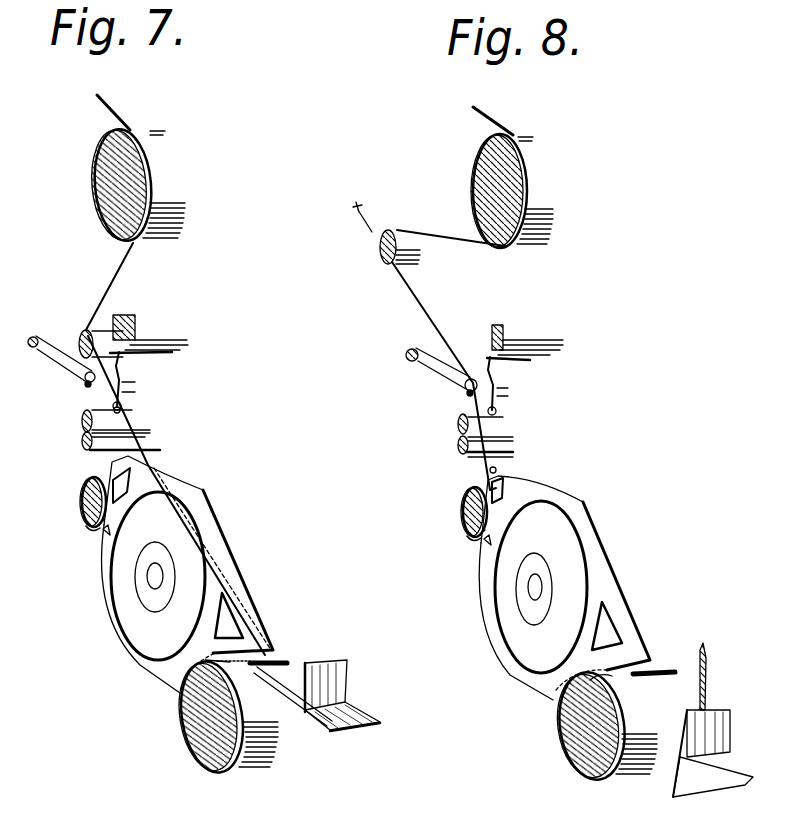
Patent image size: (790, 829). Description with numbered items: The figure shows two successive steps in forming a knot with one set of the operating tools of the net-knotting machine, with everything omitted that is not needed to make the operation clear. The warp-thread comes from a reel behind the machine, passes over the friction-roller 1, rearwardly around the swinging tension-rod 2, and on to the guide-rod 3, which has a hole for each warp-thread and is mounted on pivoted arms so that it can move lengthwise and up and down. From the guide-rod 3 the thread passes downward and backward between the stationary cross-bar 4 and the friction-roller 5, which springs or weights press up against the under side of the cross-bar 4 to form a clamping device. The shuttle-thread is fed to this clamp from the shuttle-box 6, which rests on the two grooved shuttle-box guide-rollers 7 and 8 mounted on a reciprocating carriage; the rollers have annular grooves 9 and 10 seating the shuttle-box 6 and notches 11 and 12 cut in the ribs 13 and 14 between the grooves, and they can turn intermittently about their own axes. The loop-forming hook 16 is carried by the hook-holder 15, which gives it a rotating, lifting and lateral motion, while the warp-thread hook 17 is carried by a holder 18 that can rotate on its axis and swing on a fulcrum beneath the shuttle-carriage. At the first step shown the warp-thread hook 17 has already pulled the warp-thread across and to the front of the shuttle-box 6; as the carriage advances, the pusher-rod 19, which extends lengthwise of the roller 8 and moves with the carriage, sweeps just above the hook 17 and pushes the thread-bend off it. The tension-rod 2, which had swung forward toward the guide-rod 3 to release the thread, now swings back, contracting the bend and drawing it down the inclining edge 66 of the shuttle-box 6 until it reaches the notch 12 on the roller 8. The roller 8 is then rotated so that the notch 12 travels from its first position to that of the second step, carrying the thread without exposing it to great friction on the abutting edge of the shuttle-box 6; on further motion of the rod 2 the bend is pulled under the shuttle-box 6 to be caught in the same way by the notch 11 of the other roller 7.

In FIG. 7, the friction-roller 1 is at (98, 190).
In FIG. 8, the friction-roller 1 is at (485, 178).
In FIG. 7, the tension-rod 2 is at (80, 348).
In FIG. 8, the tension-rod 2 is at (380, 250).
In FIG. 7, the guide-rod 3 is at (85, 377).
In FIG. 8, the guide-rod 3 is at (465, 388).
In FIG. 7, the stationary cross-bar 4 is at (82, 420).
In FIG. 8, the stationary cross-bar 4 is at (458, 428).
In FIG. 7, the friction-roller 5 is at (82, 442).
In FIG. 8, the friction-roller 5 is at (458, 450).
In FIG. 7, the shuttle-box 6 is at (118, 613).
In FIG. 8, the shuttle-box 6 is at (508, 630).
In FIG. 7, the shuttle-box guide-roller 7 is at (82, 508).
In FIG. 8, the shuttle-box guide-roller 7 is at (461, 512).
In FIG. 7, the shuttle-box guide-roller 8 is at (190, 720).
In FIG. 8, the shuttle-box guide-roller 8 is at (568, 733).
In FIG. 7, the annular groove 9 is at (87, 527).
In FIG. 8, the annular groove 9 is at (467, 536).
In FIG. 7, the annular groove 10 is at (197, 755).
In FIG. 8, the annular groove 10 is at (580, 770).
In FIG. 7, the notch 11 is at (108, 530).
In FIG. 8, the notch 11 is at (488, 543).
In FIG. 7, the notch 12 is at (217, 660).
In FIG. 8, the notch 12 is at (558, 703).
In FIG. 7, the rib 13 is at (96, 528).
In FIG. 8, the rib 13 is at (477, 538).
In FIG. 7, the rib 14 is at (225, 772).
In FIG. 8, the rib 14 is at (610, 775).
In FIG. 7, the hook-holder 15 is at (143, 323).
In FIG. 8, the hook-holder 15 is at (527, 332).
In FIG. 7, the loop-forming hook 16 is at (122, 394).
In FIG. 8, the loop-forming hook 16 is at (500, 403).
In FIG. 7, the warp-thread hook 17 is at (262, 670).
In FIG. 8, the warp-thread hook 17 is at (707, 650).
In FIG. 7, the holder 18 is at (338, 690).
In FIG. 8, the holder 18 is at (716, 732).
In FIG. 7, the pusher-rod 19 is at (285, 660).
In FIG. 8, the pusher-rod 19 is at (640, 678).
In FIG. 7, the inclining edge 66 is at (247, 660).
In FIG. 7, the thread r is at (98, 105).
In FIG. 8, the thread r is at (482, 113).
In FIG. 7, the thread guide eye s is at (120, 410).
In FIG. 8, the thread guide eye s is at (500, 467).